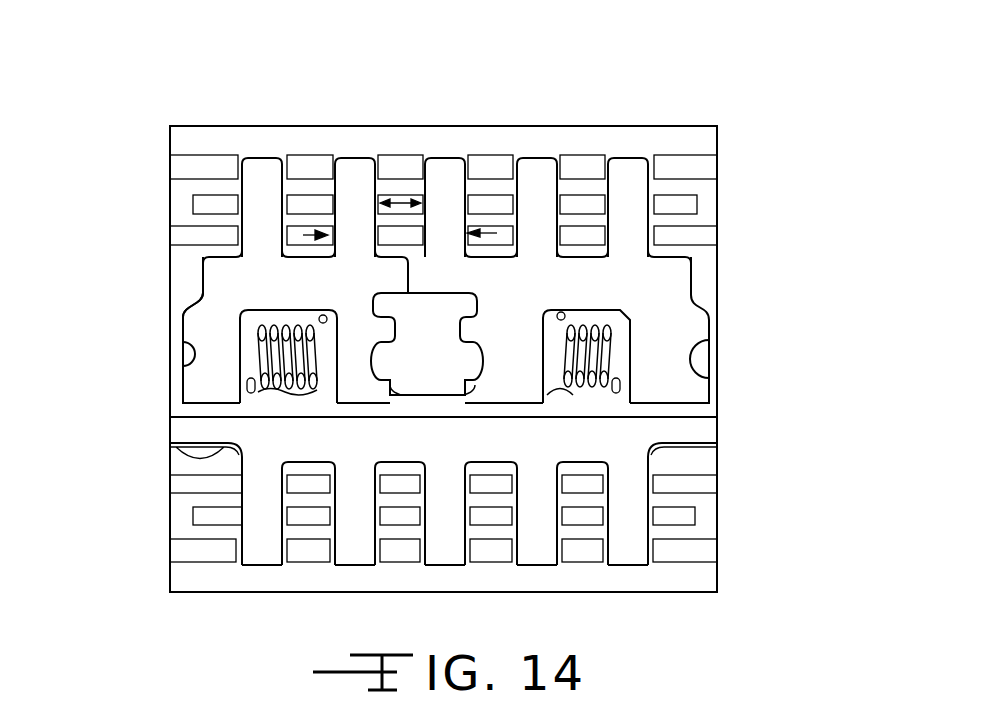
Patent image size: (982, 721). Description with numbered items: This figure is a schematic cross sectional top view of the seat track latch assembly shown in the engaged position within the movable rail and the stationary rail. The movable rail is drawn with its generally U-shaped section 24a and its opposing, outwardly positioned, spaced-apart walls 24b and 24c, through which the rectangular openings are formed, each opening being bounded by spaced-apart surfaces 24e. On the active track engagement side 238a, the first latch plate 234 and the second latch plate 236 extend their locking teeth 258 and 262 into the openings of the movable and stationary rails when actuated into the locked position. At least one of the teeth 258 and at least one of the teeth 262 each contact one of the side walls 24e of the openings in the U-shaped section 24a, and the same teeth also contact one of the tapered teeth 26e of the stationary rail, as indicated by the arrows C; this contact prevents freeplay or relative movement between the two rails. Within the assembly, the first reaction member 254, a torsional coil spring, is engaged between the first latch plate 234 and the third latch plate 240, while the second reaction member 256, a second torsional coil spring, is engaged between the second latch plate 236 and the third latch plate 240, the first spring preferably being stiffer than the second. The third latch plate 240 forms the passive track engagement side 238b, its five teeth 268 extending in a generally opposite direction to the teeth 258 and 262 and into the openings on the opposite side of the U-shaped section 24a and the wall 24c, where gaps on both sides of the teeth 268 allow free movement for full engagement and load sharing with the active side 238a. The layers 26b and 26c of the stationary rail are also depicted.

The first latch plate 234 is at (670, 283).
The second latch plate 236 is at (203, 280).
The active track engagement side 238a is at (745, 208).
The passive track engagement side 238b is at (748, 525).
The third latch plate 240 is at (683, 433).
The first reaction member 254 is at (608, 355).
The second reaction member 256 is at (253, 352).
The locking teeth 258 is at (442, 177).
The locking teeth 262 is at (262, 178).
The teeth 268 is at (260, 545).
The U-shaped section 24a is at (158, 237).
The spaced-apart wall 24b is at (165, 165).
The spaced-apart wall 24c is at (181, 552).
The spaced-apart surfaces 24e is at (347, 240).
The insulating layer 26b is at (183, 207).
The insulating layer 26c is at (182, 513).
The tapered teeth 26e is at (218, 207).
The arrows indicating contact C is at (303, 237).